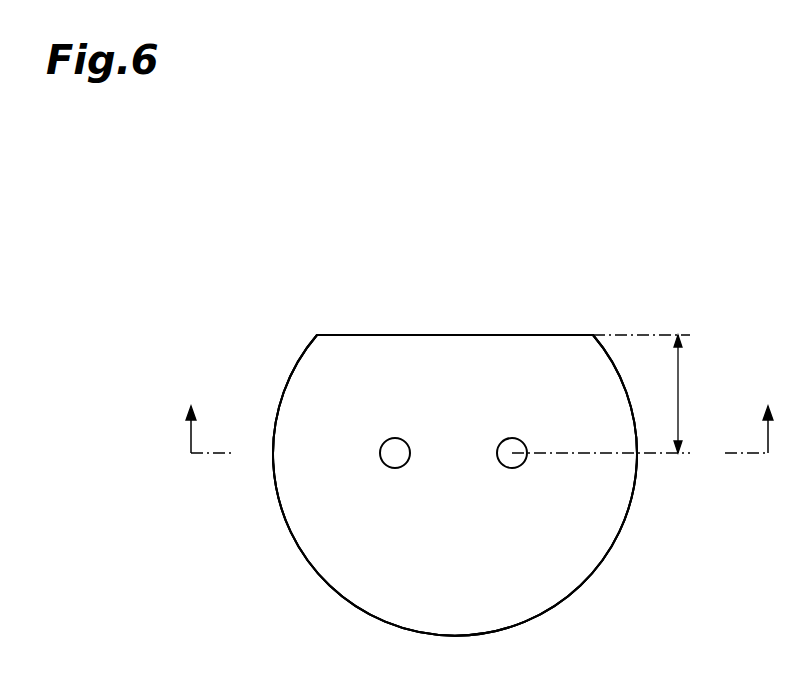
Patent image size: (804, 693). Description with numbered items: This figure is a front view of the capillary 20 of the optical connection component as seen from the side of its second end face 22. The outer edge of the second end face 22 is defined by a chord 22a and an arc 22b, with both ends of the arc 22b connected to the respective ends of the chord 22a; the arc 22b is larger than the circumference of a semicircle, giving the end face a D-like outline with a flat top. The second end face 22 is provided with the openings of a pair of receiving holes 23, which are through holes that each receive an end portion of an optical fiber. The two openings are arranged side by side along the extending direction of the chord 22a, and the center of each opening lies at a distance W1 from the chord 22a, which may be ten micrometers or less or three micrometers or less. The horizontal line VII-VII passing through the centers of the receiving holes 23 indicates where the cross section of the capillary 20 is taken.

The capillary 20 is at (311, 302).
The second end face 22 is at (350, 533).
The chord 22a is at (447, 335).
The arc 22b is at (580, 586).
The receiving holes 23 is at (505, 438).
The distance W1 is at (698, 394).
The line VII- VII is at (478, 418).